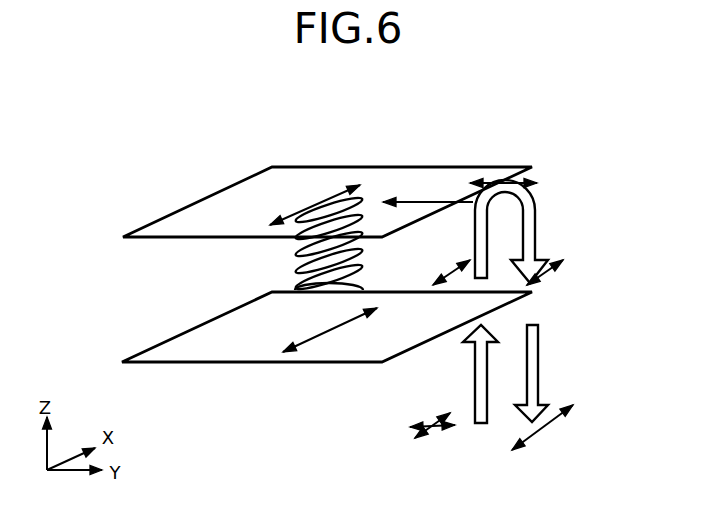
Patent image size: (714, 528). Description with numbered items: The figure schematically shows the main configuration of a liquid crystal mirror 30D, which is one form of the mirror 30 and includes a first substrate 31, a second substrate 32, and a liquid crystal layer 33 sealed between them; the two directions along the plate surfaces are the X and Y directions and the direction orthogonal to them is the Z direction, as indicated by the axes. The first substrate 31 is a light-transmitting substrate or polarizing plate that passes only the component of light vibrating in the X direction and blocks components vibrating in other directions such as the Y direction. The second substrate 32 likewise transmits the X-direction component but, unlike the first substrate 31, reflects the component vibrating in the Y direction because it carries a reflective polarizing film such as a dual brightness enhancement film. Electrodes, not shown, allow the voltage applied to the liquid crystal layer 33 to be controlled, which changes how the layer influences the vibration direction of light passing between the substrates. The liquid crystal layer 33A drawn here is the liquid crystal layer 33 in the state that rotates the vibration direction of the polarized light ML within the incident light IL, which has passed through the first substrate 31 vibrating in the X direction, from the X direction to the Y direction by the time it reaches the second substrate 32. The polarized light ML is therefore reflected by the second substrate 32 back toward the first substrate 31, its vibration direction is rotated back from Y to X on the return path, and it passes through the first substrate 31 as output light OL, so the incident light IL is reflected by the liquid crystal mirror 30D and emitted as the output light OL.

The liquid crystal mirror 30D is at (387, 271).
The cell 30 is at (365, 273).
The first substrate 31 is at (172, 363).
The second substrate 32 is at (297, 167).
The liquid crystal layer 33A is at (275, 244).
The liquid crystal layer 33 is at (274, 268).
The polarized light ML is at (533, 210).
The incident light IL is at (473, 373).
The output light OL is at (538, 372).